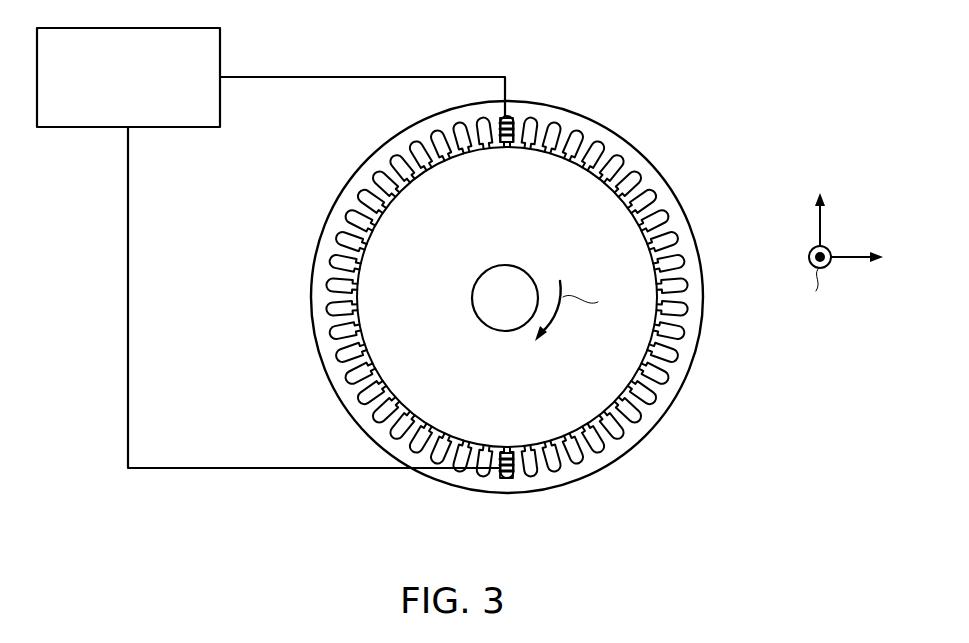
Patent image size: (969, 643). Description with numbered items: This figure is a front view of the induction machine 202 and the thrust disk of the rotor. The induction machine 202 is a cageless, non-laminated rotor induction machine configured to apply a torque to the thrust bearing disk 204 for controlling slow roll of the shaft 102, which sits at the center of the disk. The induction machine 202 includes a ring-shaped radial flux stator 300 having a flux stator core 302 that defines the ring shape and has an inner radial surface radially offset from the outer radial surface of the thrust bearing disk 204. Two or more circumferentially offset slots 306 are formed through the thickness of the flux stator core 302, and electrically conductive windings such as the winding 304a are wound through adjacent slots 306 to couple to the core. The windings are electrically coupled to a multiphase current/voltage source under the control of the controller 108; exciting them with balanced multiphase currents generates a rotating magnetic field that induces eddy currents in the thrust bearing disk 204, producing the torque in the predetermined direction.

The controller 108 is at (107, 91).
The induction machine 202 is at (708, 55).
The shaft 102 is at (486, 311).
The thrust bearing disk 204 is at (485, 390).
The radial flux stator 300 is at (641, 442).
The flux stator core 302 is at (688, 370).
The electrically conductive winding 304a is at (519, 113).
The slots 306 is at (578, 130).